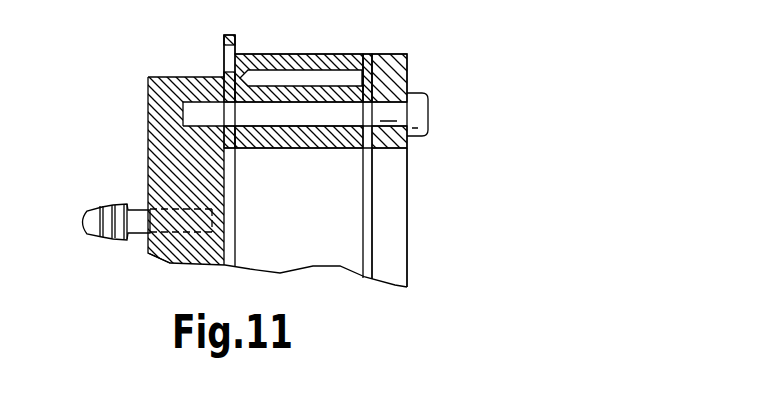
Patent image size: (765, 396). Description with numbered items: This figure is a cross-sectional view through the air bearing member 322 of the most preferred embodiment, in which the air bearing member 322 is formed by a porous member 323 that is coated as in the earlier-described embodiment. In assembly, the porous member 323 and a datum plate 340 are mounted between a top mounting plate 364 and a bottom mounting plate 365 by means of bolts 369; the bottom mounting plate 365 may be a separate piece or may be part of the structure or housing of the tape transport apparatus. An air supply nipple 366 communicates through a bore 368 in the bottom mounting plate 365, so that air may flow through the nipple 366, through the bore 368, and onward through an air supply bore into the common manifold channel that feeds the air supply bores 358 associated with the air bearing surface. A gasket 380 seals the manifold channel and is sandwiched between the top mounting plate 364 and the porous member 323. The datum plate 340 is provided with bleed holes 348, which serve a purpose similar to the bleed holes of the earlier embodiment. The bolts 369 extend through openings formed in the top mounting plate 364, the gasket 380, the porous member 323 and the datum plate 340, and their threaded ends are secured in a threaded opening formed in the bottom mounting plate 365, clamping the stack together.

The air bearing member 322 is at (530, 143).
The porous member 323 is at (328, 208).
The datum plate 340 is at (237, 202).
The bleed holes 348 is at (222, 60).
The air supply bores 358 is at (323, 78).
The top mounting plate 364 is at (397, 248).
The bottom mounting plate 365 is at (165, 172).
The air supply nipple 366 is at (133, 247).
The bore 368 is at (167, 268).
The bolts 369 is at (431, 108).
The gasket 380 is at (370, 170).